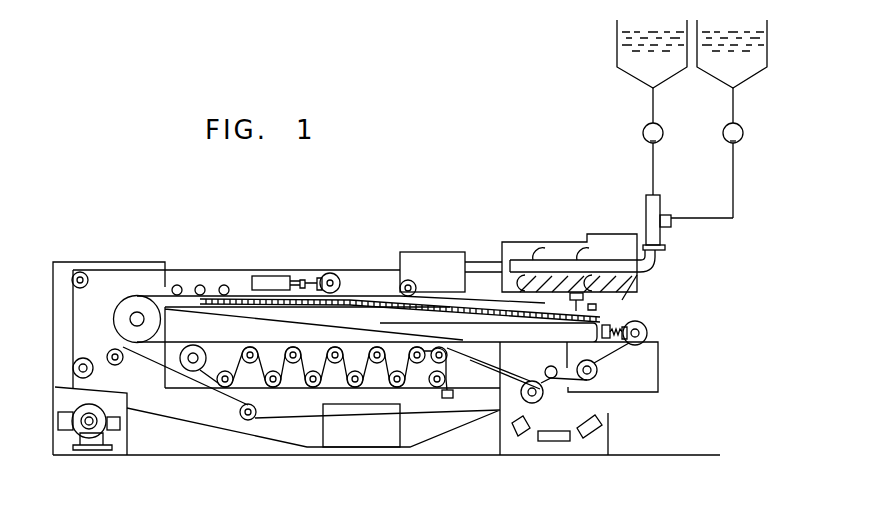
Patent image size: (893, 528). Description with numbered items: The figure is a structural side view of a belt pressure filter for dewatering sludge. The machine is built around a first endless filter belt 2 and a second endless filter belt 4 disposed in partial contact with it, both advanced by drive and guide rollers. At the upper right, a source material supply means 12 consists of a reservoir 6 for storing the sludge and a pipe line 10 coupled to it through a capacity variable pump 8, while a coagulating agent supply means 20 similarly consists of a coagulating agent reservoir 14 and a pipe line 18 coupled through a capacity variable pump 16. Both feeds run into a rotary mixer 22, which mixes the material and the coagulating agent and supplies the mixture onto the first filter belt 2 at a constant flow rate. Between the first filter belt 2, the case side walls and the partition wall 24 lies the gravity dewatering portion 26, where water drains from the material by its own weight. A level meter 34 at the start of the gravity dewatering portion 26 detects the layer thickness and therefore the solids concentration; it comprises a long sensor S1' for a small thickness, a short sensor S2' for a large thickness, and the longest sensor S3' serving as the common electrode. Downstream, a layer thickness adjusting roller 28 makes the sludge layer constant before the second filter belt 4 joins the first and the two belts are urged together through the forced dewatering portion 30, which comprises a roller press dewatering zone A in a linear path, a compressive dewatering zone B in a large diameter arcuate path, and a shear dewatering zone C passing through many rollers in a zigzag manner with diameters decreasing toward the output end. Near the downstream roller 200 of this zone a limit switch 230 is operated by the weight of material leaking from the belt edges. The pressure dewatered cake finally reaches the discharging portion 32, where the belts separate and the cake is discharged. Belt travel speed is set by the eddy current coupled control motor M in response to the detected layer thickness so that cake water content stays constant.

The first endless filter belt 2 is at (612, 367).
The second endless filter belt 4 is at (250, 270).
The reservoir 6 is at (627, 50).
The capacity variable pump 8 is at (645, 140).
The pipe line 10 is at (656, 170).
The source material supply means 12 is at (613, 111).
The coagulating agent reservoir 14 is at (713, 67).
The capacity variable pump 16 is at (723, 133).
The pipe line 18 is at (723, 222).
The coagulating agent supply means 20 is at (742, 164).
The rotary mixer 22 is at (522, 240).
The partition wall 24 is at (625, 303).
The gravity dewatering portion 26 is at (483, 281).
The layer thickness adjusting roller 28 is at (393, 284).
The forced dewatering portion 30 is at (190, 405).
The discharging portion 32 is at (568, 415).
The level meter 34 is at (600, 299).
The roller 200 is at (449, 382).
The limit switch 230 is at (447, 399).
The roller press dewatering zone A is at (215, 252).
The compressive dewatering zone B is at (98, 292).
The shear dewatering zone C is at (280, 404).
The eddy current coupled control motor M is at (90, 432).
The long sensor S1' is at (652, 345).
The short sensor S2' is at (642, 308).
The longest sensor S3' is at (556, 302).